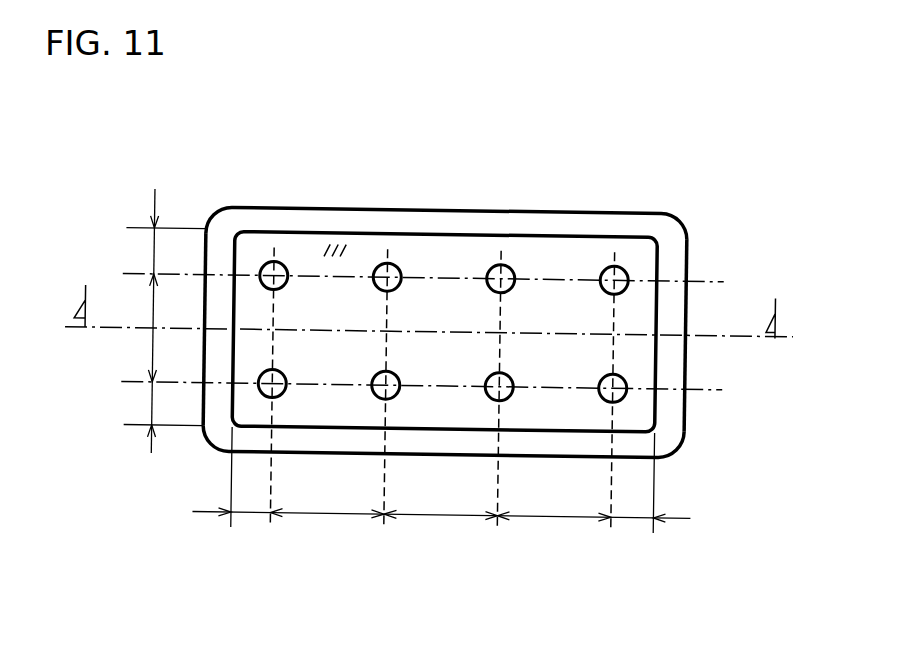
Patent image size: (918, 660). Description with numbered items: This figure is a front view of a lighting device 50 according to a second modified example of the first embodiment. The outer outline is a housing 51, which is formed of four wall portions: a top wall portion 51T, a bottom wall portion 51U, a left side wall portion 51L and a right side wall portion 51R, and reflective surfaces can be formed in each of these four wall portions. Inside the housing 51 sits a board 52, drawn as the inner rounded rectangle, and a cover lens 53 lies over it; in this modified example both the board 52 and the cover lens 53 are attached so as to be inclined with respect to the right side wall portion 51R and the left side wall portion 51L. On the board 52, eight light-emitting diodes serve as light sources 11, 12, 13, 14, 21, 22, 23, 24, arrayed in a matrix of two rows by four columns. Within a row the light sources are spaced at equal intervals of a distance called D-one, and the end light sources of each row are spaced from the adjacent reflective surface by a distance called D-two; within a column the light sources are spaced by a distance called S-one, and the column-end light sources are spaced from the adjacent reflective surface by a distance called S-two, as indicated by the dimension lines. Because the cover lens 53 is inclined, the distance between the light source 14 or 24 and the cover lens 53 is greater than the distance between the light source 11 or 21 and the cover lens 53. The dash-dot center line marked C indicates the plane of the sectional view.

The lighting device 50 is at (365, 136).
The housing 51 is at (657, 212).
The wall portion 51T is at (451, 247).
The wall portion 51U is at (479, 457).
The left side wall portion 51L is at (676, 372).
The right side wall portion 51R is at (205, 355).
The board 52 is at (545, 250).
The cover lens 53 is at (322, 257).
The light source 11 is at (283, 285).
The light source 12 is at (397, 286).
The light source 13 is at (490, 271).
The light source 14 is at (601, 289).
The light source 21 is at (283, 375).
The light source 22 is at (396, 394).
The light source 23 is at (489, 378).
The light source 24 is at (600, 375).